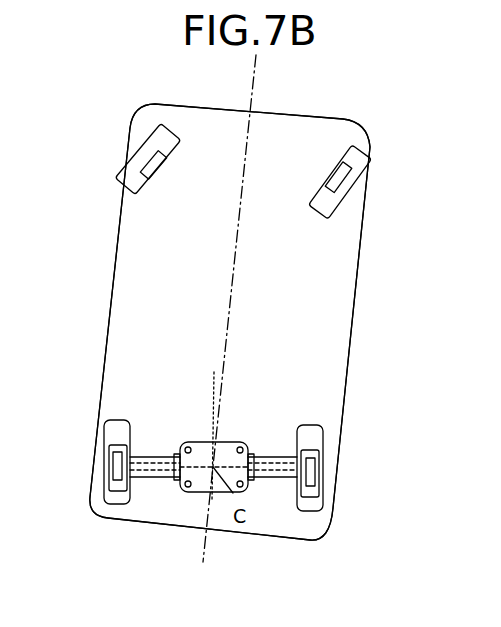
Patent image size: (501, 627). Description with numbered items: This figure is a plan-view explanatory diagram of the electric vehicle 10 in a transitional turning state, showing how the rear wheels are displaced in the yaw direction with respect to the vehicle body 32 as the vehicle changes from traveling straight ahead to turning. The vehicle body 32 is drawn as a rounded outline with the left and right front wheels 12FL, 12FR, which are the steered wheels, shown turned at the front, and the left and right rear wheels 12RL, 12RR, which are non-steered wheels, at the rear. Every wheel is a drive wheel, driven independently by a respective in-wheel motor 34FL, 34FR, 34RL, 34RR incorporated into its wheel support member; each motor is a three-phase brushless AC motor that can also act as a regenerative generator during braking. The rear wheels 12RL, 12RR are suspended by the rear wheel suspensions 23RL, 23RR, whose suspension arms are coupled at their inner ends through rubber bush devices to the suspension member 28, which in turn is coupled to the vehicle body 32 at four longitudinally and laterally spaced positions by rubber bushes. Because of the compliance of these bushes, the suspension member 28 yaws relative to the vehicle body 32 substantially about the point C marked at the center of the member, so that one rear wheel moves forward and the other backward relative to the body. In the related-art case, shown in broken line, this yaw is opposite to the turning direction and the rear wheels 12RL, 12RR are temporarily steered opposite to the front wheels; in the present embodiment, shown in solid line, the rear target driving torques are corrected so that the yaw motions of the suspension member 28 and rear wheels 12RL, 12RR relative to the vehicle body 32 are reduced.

The electric vehicle 10 is at (124, 106).
The vehicle body 32 is at (353, 306).
The left front wheel 12FL is at (127, 167).
The right front wheel 12FR is at (350, 196).
The left rear wheel 12RL is at (104, 497).
The right rear wheel 12RR is at (323, 500).
The in-wheel motor 34FL is at (162, 171).
The in-wheel motor 34FR is at (333, 180).
The in-wheel motor 34RL is at (109, 455).
The in-wheel motor 34RR is at (322, 452).
The rear wheel suspension 23RL is at (154, 446).
The rear wheel suspension 23RR is at (278, 446).
The suspension member 28 is at (229, 442).